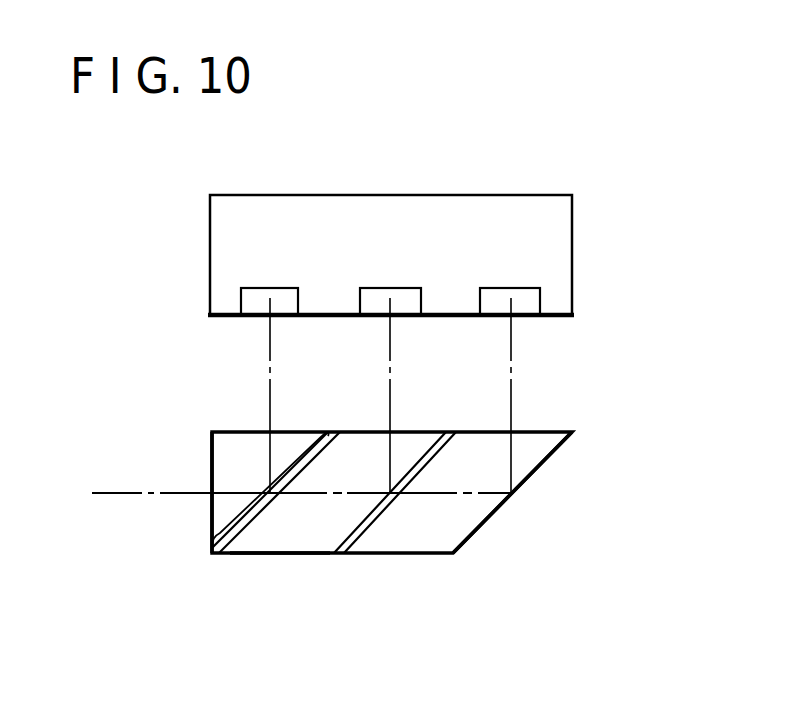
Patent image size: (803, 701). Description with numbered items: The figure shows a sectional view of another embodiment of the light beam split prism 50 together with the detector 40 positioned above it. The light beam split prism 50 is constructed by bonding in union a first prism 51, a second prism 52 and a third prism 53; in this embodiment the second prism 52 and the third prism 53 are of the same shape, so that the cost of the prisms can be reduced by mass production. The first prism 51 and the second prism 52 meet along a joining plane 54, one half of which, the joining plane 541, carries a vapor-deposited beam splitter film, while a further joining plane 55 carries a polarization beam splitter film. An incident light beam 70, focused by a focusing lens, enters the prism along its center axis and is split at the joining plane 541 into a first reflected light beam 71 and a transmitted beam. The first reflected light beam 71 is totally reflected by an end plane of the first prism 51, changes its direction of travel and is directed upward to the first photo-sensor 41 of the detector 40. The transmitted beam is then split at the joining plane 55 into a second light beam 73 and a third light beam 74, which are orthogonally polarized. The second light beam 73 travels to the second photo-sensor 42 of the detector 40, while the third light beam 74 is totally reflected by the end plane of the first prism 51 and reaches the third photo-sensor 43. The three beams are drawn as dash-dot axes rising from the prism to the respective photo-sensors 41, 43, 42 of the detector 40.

The detector 40 is at (555, 248).
The first photo-sensor 41 is at (257, 295).
The second photo-sensor 42 is at (503, 295).
The third photo-sensor 43 is at (376, 296).
The light beam split prism 50 is at (347, 525).
The first prism 51 is at (222, 515).
The second prism 52 is at (310, 543).
The third prism 53 is at (433, 543).
The joining plane 54 is at (231, 517).
The joining plane half with beam splitter film 541 is at (226, 477).
The joining plane 55 is at (338, 545).
The light beam 70 is at (121, 497).
The first reflected light beam 71 is at (270, 333).
The second light beam 73 is at (511, 333).
The third light beam 74 is at (390, 333).